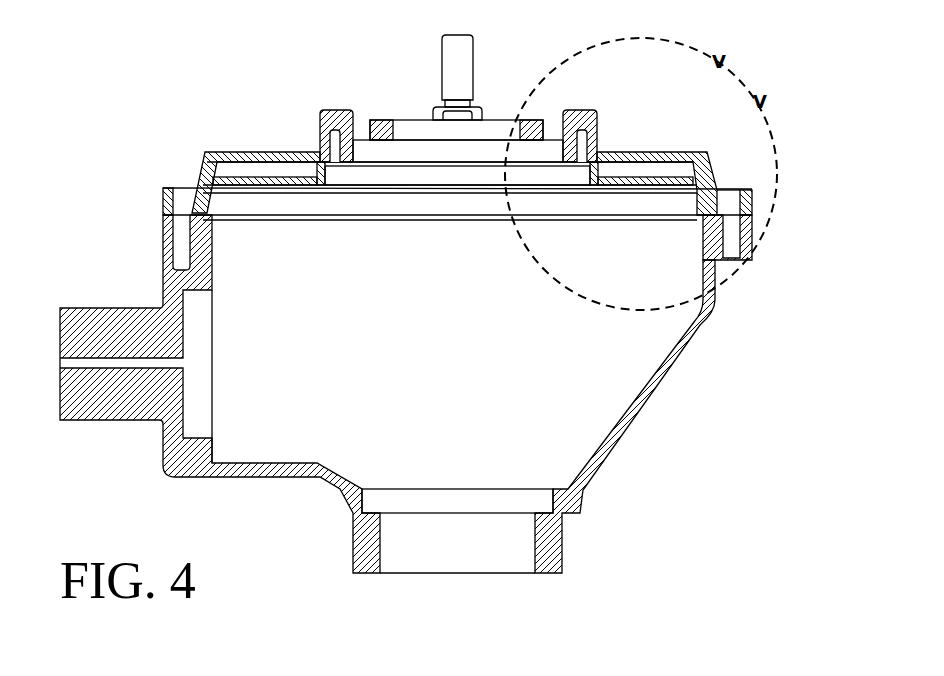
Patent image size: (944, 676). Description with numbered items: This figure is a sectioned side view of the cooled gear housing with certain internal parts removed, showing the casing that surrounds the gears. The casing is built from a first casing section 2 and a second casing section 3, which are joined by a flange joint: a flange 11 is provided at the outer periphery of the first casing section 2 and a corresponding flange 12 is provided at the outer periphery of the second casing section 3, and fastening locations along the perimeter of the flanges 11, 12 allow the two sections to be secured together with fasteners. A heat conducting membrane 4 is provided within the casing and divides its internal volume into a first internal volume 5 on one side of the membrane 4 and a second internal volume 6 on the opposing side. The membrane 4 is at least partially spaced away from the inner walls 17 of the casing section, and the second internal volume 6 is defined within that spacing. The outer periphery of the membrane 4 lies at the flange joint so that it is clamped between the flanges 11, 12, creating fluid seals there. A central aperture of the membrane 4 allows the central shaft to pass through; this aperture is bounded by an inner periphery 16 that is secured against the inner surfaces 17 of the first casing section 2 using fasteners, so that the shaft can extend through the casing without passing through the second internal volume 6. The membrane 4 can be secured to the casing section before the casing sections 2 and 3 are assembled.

The first casing section 2 is at (640, 420).
The second casing section 3 is at (243, 150).
The heat conducting membrane 4 is at (318, 183).
The first internal volume 5 is at (532, 405).
The second internal volume 6 is at (627, 161).
The flange 11 is at (752, 232).
The flange 12 is at (752, 198).
The inner periphery 16 is at (165, 214).
The inner surfaces 17 is at (284, 162).